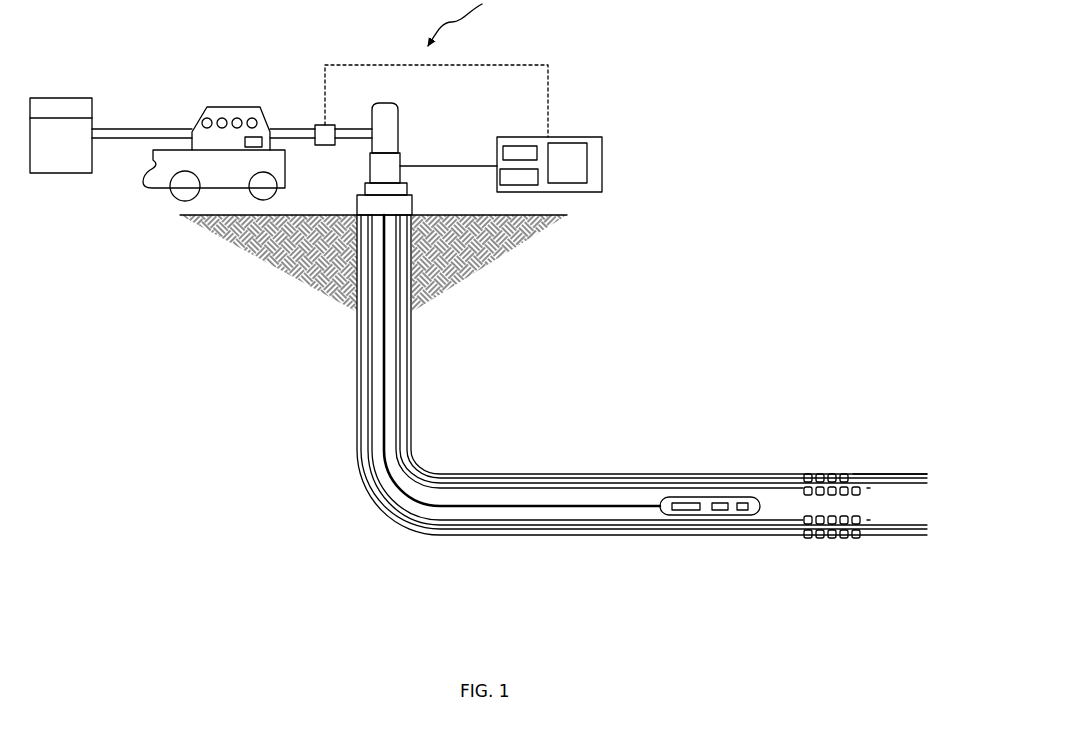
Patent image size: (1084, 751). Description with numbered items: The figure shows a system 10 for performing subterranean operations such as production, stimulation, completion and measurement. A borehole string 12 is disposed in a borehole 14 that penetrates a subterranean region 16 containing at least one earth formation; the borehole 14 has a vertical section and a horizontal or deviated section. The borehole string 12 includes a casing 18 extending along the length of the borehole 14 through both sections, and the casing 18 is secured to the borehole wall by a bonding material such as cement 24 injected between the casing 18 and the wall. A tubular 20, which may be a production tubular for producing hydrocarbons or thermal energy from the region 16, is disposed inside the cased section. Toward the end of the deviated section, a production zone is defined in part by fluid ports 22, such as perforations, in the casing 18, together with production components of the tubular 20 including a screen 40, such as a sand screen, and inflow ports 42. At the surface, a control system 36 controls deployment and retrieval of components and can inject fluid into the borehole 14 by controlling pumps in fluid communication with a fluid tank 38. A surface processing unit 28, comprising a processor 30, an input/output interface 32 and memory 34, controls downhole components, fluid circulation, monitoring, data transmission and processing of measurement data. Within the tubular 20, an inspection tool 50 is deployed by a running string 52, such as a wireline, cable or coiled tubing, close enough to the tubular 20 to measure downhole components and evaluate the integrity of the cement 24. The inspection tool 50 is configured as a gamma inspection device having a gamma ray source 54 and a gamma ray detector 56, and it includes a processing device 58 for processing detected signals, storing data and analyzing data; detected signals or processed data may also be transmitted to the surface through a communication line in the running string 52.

The system 10 is at (700, 142).
The borehole string 12 is at (698, 378).
The borehole 14 is at (893, 507).
The subterranean region 16 is at (487, 298).
The casing 18 is at (360, 283).
The tubular 20 is at (400, 337).
The fluid ports 22 is at (846, 480).
The cement 24 is at (630, 474).
The surface processing unit 28 is at (595, 137).
The processor 30 is at (523, 177).
The input/output interface 32 is at (520, 157).
The memory 34 is at (585, 163).
The control system 36 is at (230, 107).
The fluid tank 38 is at (65, 128).
The screen 40 is at (800, 482).
The inflow ports 42 is at (858, 520).
The inspection tool 50 is at (735, 500).
The running string 52 is at (383, 355).
The gamma ray source 54 is at (684, 512).
The gamma ray detector 56 is at (745, 515).
The processing device 58 is at (722, 512).